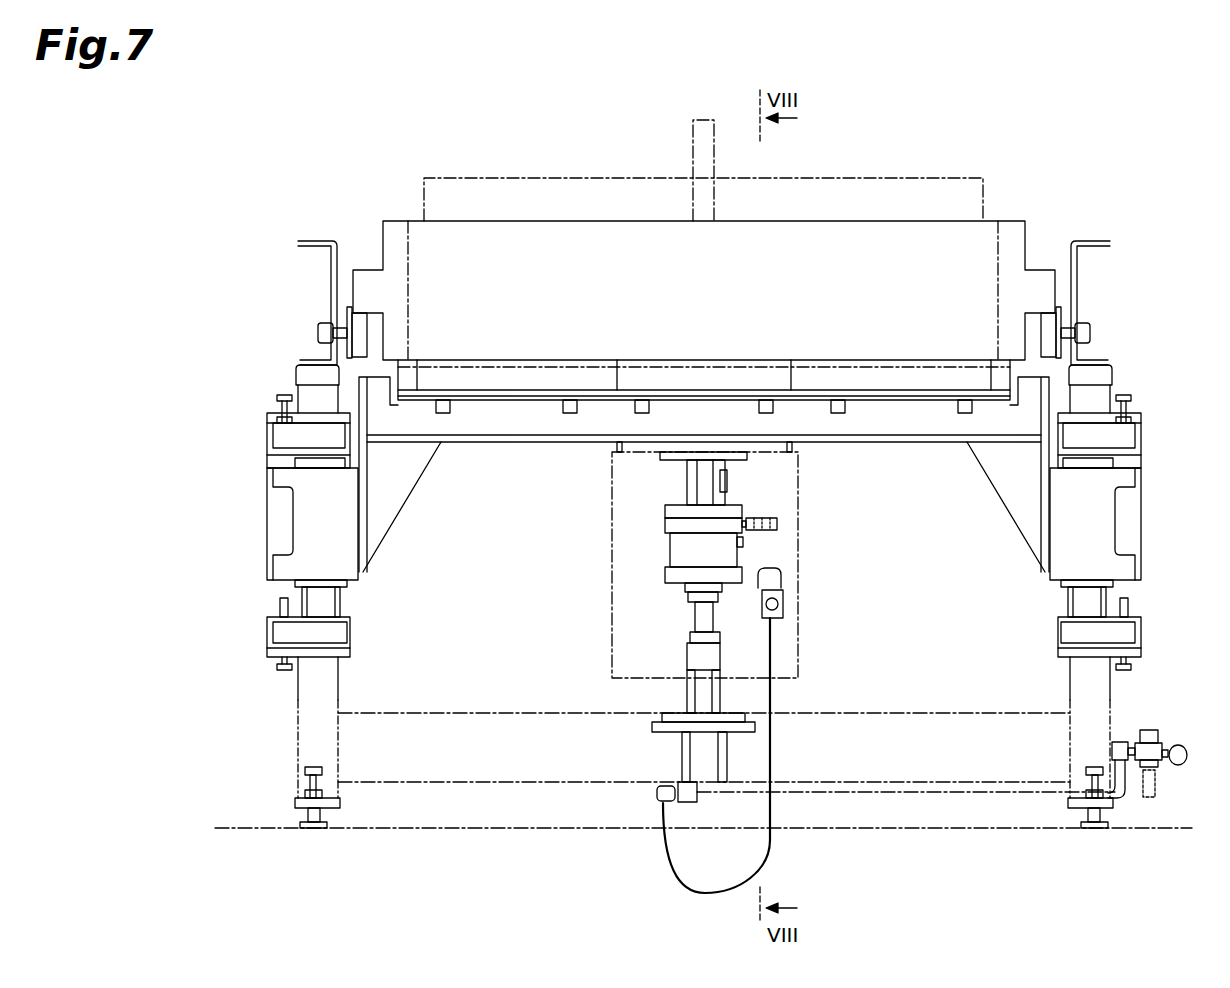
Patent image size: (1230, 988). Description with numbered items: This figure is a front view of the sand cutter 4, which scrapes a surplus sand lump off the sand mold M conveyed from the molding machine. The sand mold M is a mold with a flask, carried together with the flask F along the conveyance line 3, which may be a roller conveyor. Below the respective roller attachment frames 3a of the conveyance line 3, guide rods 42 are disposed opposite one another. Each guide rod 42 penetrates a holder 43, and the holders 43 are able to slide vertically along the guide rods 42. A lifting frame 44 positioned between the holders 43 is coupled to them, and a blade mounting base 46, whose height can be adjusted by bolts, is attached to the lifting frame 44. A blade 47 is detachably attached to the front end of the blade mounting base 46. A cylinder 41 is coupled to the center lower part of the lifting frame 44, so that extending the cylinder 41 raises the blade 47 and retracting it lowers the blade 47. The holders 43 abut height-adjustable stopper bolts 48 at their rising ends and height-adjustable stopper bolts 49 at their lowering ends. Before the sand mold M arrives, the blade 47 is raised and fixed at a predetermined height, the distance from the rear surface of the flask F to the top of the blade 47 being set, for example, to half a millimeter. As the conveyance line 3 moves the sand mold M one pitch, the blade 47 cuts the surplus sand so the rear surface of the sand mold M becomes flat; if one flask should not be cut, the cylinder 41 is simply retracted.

The conveyance line 3 is at (671, 271).
The roller attachment frame 3a is at (318, 240).
The sand cutter 4 is at (1147, 183).
The cylinder 41 is at (670, 547).
The guide rod 42 is at (347, 605).
The holder 43 is at (358, 580).
The lifting frame 44 is at (508, 446).
The blade mounting base 46 is at (538, 385).
The blade 47 is at (417, 362).
The bolt (rising-end stopper) 48 is at (272, 460).
The bolt (lowering-end stopper) 49 is at (282, 608).
The sand mold M is at (516, 168).
The flask F is at (397, 218).